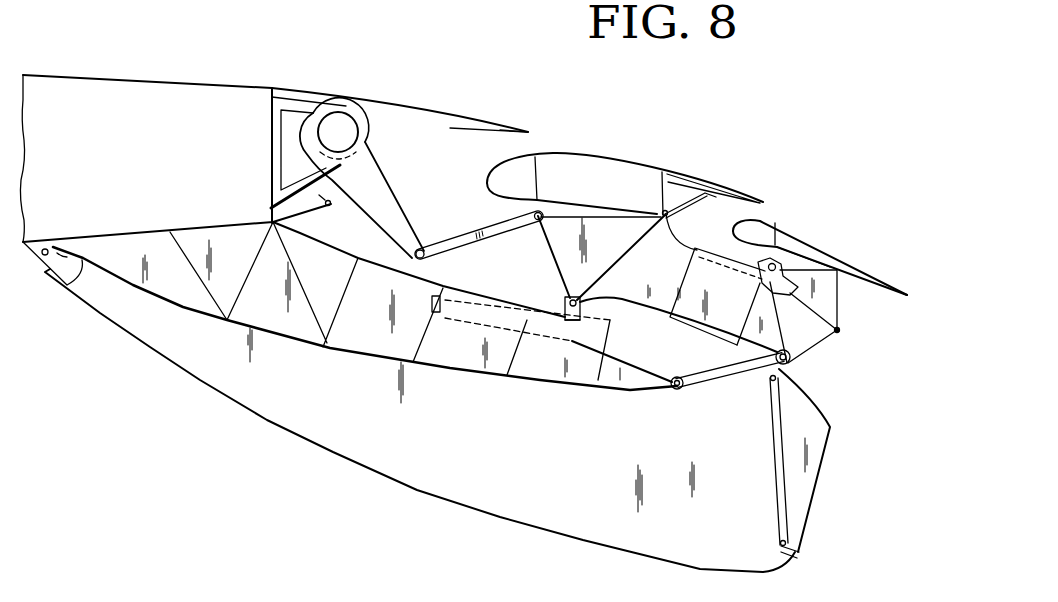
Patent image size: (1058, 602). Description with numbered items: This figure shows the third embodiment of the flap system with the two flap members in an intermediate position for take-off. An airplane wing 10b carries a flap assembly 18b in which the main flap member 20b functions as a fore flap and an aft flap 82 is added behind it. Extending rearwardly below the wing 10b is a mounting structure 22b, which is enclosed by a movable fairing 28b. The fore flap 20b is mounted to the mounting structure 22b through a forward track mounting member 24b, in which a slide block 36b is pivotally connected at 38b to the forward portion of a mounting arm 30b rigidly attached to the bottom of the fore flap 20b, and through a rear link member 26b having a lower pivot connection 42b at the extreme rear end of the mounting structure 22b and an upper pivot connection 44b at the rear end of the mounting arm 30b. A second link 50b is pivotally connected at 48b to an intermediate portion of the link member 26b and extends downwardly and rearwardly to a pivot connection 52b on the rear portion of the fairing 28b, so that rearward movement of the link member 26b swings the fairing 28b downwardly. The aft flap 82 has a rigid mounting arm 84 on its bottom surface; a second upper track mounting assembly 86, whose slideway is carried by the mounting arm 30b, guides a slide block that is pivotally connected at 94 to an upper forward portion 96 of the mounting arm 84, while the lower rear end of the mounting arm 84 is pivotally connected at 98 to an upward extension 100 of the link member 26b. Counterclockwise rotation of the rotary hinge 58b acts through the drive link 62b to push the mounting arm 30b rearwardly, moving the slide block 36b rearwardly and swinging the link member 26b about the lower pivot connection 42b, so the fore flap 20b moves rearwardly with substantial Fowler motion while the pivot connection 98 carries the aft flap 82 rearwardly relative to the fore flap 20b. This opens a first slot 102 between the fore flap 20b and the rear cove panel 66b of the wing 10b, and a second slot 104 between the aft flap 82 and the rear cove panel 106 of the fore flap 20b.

The wing 10b is at (217, 98).
The rotary hinge 58b is at (341, 120).
The drive link 62b is at (460, 235).
The rear cove panel 66b is at (482, 123).
The first slot 102 is at (527, 143).
The flap member 20b is at (627, 175).
The rear cove panel 106 is at (735, 195).
The second slot 104 is at (753, 213).
The pivot connection 94 is at (776, 266).
The upper forward portion of the mounting arm 96 is at (797, 262).
The aft flap 82 is at (873, 275).
The mounting arm 84 is at (833, 302).
The pivot connection 98 is at (841, 331).
The upward extension 100 is at (805, 353).
The upper pivot connection 44b is at (787, 367).
The flap assembly 18b is at (881, 383).
The second upper track mounting assembly 86 is at (682, 263).
The pivot connection 38b is at (565, 300).
The mounting arm 30b is at (657, 317).
The mounting structure 22b is at (372, 352).
The forward track mounting member 24b is at (488, 323).
The slide block 36b is at (570, 320).
The lower pivot connection 42b is at (673, 389).
The link member 26b is at (723, 377).
The pivot connection 48b is at (830, 430).
The second link 50b is at (775, 505).
The pivot connection 52b is at (793, 553).
The movable fairing 28b is at (512, 505).